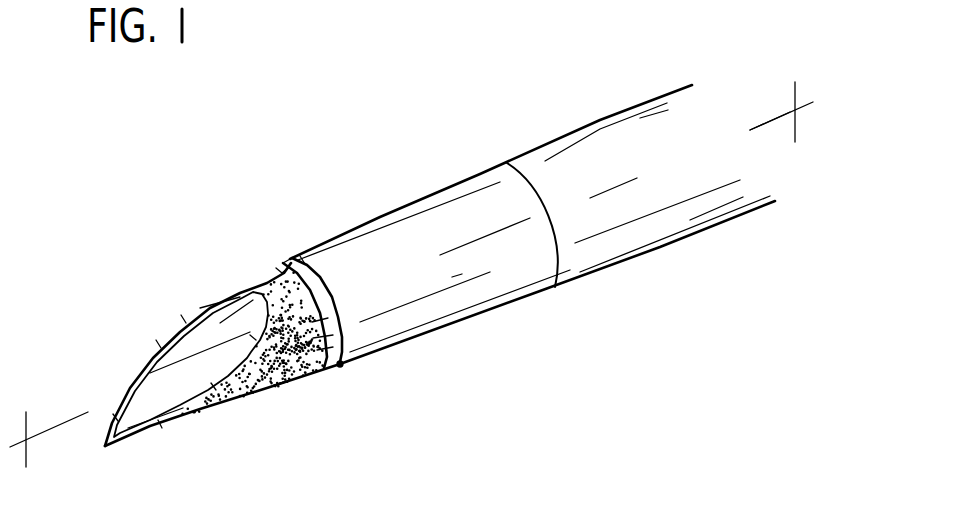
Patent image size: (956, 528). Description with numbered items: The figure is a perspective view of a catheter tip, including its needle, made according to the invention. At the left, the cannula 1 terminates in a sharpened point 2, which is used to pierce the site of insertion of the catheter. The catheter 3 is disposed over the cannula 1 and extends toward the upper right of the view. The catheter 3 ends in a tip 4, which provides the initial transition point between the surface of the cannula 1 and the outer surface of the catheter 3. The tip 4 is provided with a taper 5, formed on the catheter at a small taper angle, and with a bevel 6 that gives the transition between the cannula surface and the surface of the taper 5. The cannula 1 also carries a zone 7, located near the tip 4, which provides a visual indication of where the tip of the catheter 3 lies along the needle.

The cannula 1 is at (285, 390).
The sharpened point 2 is at (806, 118).
The catheter 3 is at (660, 252).
The tip 4 is at (341, 368).
The taper 5 is at (452, 277).
The bevel 6 is at (289, 259).
The zone 7 is at (282, 272).